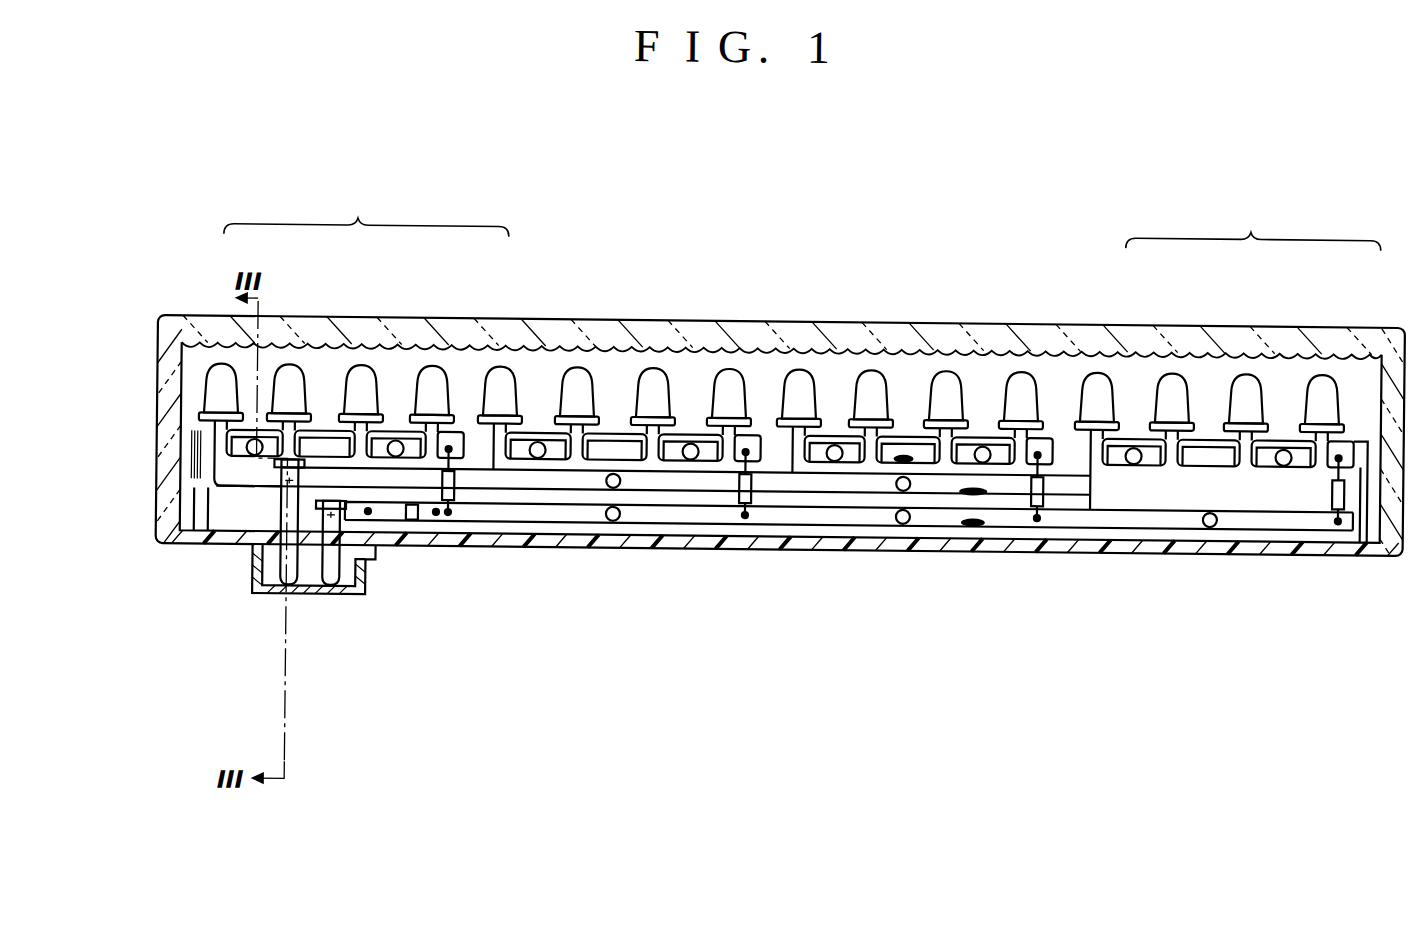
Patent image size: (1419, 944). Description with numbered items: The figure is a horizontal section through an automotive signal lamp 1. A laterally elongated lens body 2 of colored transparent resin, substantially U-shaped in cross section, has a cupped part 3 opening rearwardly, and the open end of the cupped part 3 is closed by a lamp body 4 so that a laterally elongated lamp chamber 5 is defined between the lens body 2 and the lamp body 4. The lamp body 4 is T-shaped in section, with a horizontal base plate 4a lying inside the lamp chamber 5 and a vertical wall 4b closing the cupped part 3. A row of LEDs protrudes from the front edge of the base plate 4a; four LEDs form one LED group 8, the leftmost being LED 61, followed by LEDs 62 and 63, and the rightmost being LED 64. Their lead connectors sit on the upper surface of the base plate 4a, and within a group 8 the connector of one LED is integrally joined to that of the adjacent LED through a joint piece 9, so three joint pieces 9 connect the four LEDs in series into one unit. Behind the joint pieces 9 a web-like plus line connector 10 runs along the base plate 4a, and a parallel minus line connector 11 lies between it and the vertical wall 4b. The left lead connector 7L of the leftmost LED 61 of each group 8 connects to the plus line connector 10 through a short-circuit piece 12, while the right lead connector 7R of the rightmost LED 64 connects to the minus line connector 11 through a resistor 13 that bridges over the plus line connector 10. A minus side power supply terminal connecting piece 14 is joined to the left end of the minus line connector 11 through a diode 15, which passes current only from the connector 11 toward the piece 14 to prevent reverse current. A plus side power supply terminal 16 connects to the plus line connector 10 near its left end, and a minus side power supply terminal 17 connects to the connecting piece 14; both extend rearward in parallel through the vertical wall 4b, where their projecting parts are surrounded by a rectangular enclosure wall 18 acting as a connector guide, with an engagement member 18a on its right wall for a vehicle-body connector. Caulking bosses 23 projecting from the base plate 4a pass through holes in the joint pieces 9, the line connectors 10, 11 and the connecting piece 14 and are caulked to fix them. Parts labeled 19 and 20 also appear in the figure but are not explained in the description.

The automotive signal lamp 1 is at (785, 214).
The lens body 2 is at (652, 314).
The cupped part 3 is at (1332, 500).
The lamp body 4 is at (812, 543).
The base plate 4a is at (700, 488).
The vertical wall 4b is at (1000, 521).
The lamp chamber 5 is at (822, 388).
The leftmost LED 61 is at (224, 364).
The LED 62 is at (292, 364).
The LED 63 is at (364, 364).
The rightmost LED 64 is at (436, 364).
The left lead connector 7L is at (195, 438).
The right lead connector 7R is at (233, 432).
The LED group 8 is at (801, 309).
The joint piece 9 is at (826, 445).
The plus line connector 10 is at (906, 457).
The minus line connector 11 is at (1000, 521).
The short-circuit piece 12 is at (248, 454).
The resistor 13 is at (452, 497).
The minus side power supply terminal connecting piece 14 is at (413, 522).
The diode 15 is at (438, 520).
The plus side power supply terminal 16 is at (283, 596).
The minus side power supply terminal 17 is at (333, 525).
The enclosure wall 18 is at (285, 482).
The engagement member 18a is at (373, 560).
The drain pipe 19 is at (201, 548).
The pipe 20 is at (357, 590).
The caulking boss 23 is at (614, 485).